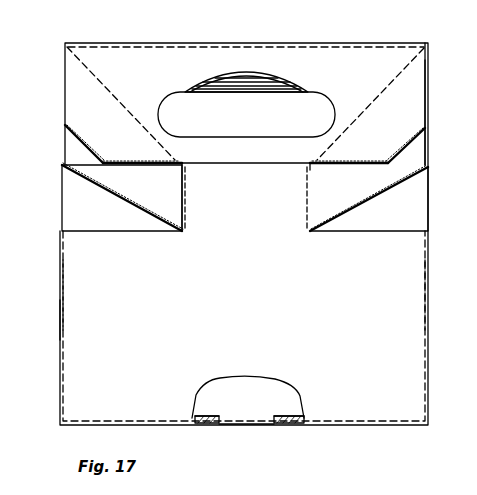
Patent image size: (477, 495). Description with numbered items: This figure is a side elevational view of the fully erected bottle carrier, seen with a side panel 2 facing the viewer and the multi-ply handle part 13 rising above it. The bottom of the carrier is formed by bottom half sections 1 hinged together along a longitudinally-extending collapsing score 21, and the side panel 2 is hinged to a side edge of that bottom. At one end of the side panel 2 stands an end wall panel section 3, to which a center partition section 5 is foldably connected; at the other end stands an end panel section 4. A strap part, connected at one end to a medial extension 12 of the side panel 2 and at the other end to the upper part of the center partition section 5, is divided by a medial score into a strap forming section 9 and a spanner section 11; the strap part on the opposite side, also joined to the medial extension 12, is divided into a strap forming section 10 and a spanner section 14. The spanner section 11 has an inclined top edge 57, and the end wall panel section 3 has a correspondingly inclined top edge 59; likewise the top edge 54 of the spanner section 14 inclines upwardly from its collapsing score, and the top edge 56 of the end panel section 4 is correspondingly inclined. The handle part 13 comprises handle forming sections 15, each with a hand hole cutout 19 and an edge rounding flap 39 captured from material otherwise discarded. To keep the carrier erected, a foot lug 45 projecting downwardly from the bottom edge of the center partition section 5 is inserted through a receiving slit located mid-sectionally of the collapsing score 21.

The multi-ply handle part 13 is at (62, 73).
The medial extension of side panel 12 is at (252, 198).
The inclined top edge of spanner section 57 is at (100, 80).
The top edge of spanner section 54 is at (386, 98).
The hand hole cutout 19 is at (325, 97).
The edge rounding flap 39 is at (237, 75).
The handle forming section 15 is at (405, 99).
The spanner section 14 is at (404, 164).
The spanner section 11 is at (90, 165).
The inclined top edge of end panel section 59 is at (88, 183).
The top edge of end panel section 56 is at (386, 193).
The strap forming section 9 is at (186, 196).
The strap forming section 10 is at (305, 189).
The center partition section 5 is at (92, 220).
The side panel 2 is at (258, 318).
The end wall panel section 3 is at (62, 300).
The end panel section 4 is at (428, 306).
The collapsing score 21 is at (214, 425).
The foot lug 45 is at (246, 426).
The bottom half section 1 is at (294, 426).